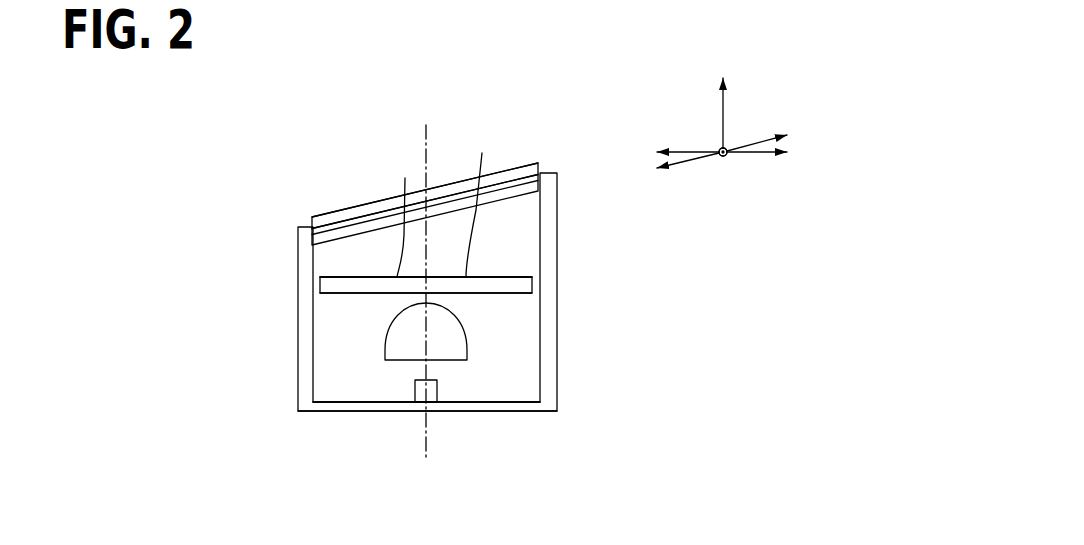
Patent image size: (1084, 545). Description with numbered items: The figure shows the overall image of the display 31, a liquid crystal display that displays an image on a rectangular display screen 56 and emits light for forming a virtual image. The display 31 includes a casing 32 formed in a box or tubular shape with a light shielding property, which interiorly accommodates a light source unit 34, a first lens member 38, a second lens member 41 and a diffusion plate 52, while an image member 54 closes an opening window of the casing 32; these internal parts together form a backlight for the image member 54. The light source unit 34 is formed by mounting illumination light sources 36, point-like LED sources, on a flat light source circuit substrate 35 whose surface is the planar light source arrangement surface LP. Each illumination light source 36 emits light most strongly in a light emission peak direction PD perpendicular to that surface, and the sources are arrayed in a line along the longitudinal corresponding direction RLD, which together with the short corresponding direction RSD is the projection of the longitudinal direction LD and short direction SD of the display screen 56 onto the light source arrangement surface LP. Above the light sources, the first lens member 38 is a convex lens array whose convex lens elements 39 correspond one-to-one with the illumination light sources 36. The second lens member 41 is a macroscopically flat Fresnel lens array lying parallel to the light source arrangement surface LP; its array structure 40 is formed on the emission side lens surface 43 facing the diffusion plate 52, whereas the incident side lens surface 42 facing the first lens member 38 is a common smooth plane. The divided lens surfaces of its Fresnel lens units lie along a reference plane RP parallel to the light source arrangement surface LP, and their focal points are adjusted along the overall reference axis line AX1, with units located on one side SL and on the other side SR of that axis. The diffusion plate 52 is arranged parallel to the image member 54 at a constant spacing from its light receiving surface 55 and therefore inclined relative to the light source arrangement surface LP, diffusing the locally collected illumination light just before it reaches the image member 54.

The display 31 is at (278, 142).
The casing 32 is at (297, 389).
The light source unit 34 is at (422, 473).
The light source circuit substrate 35 is at (357, 412).
The illumination light source 36 is at (415, 389).
The first lens member 38 is at (515, 331).
The convex lens element 39 is at (466, 337).
The array structure 40 is at (365, 276).
The second lens member 41 is at (532, 285).
The incident side lens surface 42 is at (347, 295).
The emission side lens surface 43 is at (342, 276).
The diffusion plate 52 is at (514, 193).
The image member 54 is at (539, 163).
The light receiving surface 55 is at (370, 226).
The display screen 56 is at (382, 200).
The overall reference axis line AX1 is at (426, 128).
The other side SR is at (406, 214).
The one side SL is at (481, 201).
The reference plane RP is at (505, 274).
The light source arrangement surface LP is at (505, 400).
The light emission peak direction PD is at (726, 98).
The short corresponding direction RSD is at (680, 152).
The short direction SD is at (752, 143).
The longitudinal direction LD is at (735, 187).
The longitudinal corresponding direction RLD is at (725, 156).